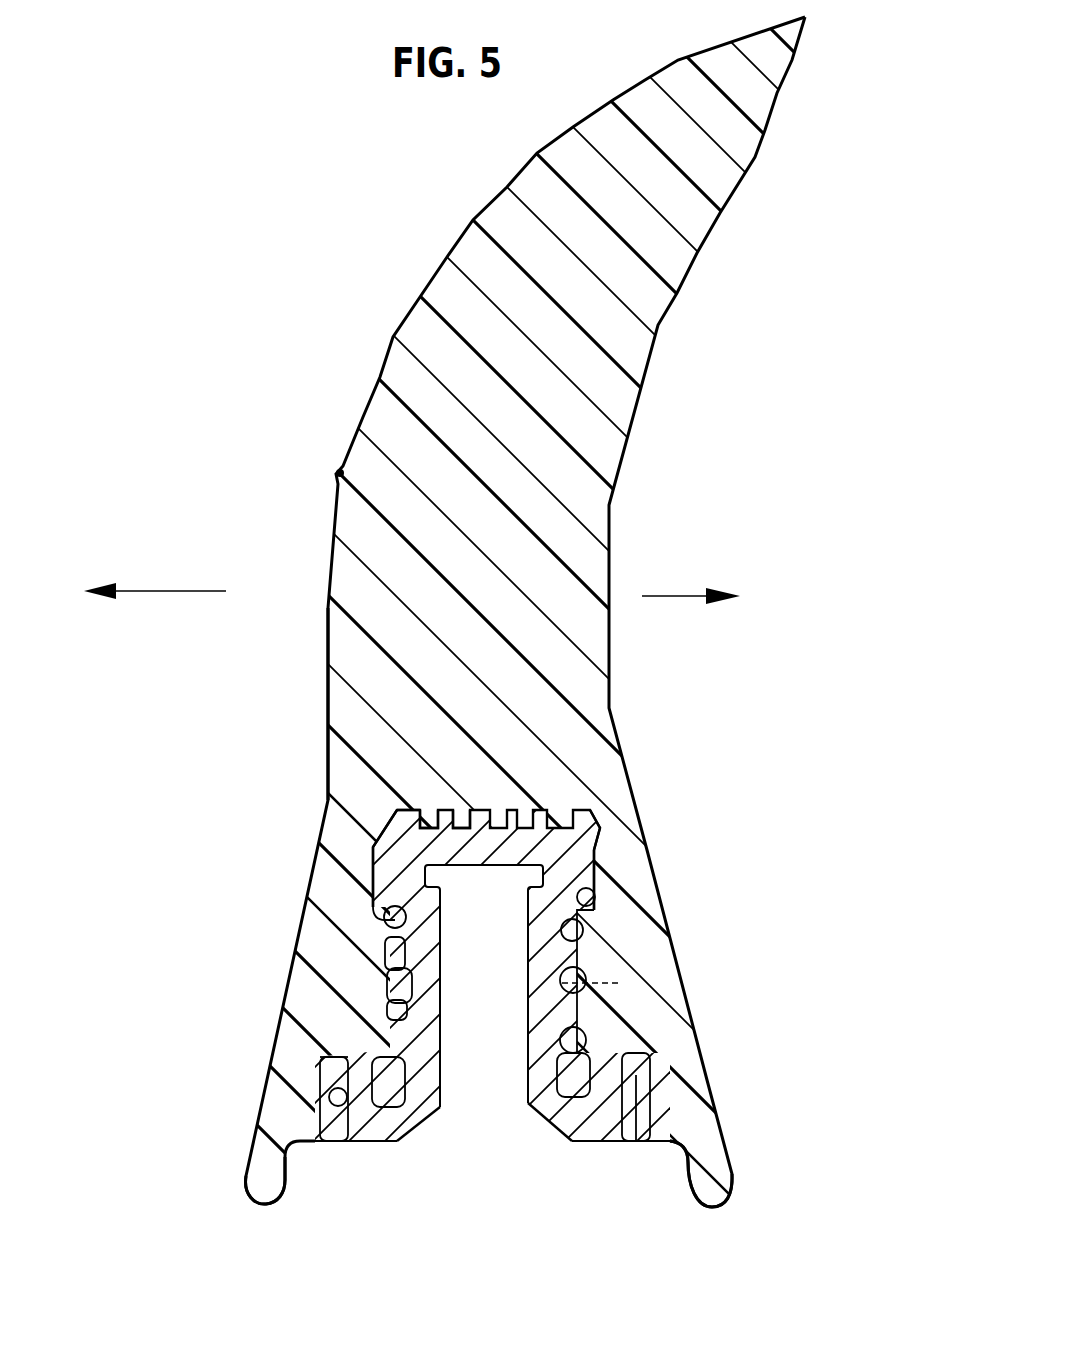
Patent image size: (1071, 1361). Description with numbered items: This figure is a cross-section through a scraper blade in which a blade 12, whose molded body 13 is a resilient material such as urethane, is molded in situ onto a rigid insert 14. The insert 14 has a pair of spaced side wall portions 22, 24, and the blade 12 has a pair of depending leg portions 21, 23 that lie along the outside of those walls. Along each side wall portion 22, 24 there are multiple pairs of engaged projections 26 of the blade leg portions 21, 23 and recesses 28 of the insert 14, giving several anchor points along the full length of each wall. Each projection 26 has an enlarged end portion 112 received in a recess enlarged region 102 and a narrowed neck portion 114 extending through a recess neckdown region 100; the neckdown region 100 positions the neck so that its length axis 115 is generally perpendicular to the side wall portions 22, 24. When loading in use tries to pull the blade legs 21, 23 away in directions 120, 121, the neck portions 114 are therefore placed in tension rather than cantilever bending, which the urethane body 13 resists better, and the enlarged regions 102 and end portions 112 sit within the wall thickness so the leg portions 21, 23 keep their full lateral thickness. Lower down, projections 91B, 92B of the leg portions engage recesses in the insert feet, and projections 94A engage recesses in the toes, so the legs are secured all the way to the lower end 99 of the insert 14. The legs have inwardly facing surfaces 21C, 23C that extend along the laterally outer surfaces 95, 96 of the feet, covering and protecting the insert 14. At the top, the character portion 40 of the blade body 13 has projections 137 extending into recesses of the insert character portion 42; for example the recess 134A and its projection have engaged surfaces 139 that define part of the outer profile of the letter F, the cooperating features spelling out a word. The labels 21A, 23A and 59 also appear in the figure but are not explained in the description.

The blade 12 is at (407, 387).
The blade body 13 is at (366, 542).
The insert 14 is at (577, 953).
The leg portion 21 is at (330, 873).
The first leg hook 21A is at (387, 943).
The inwardly facing surface 21C is at (317, 1123).
The side wall portion 22 is at (450, 1053).
The leg portion 23 is at (640, 816).
The second leg hook 23A is at (580, 1027).
The inwardly facing surface 23C is at (650, 1077).
The side wall portion 24 is at (530, 1077).
The projection 26 is at (383, 920).
The recess 28 is at (633, 893).
The character portion 40 is at (564, 812).
The character portion 42 is at (592, 842).
The slot 59 is at (485, 1085).
The projection 91B is at (387, 1093).
The projection 92B is at (585, 1095).
The projection 94A is at (347, 1093).
The laterally outer surface 95 is at (322, 1135).
The laterally outer surface 96 is at (645, 1127).
The lower end 99 is at (387, 1143).
The recess neckdown region 100 is at (343, 1037).
The recess enlarged region 102 is at (343, 1090).
The enlarged end portion 112 is at (390, 975).
The neck portion 114 is at (387, 1017).
The length axis 115 is at (600, 987).
The direction 120 is at (150, 588).
The direction 121 is at (656, 596).
The recess 134A is at (405, 810).
The projection 137 is at (414, 812).
The engaged surface 139 is at (416, 816).